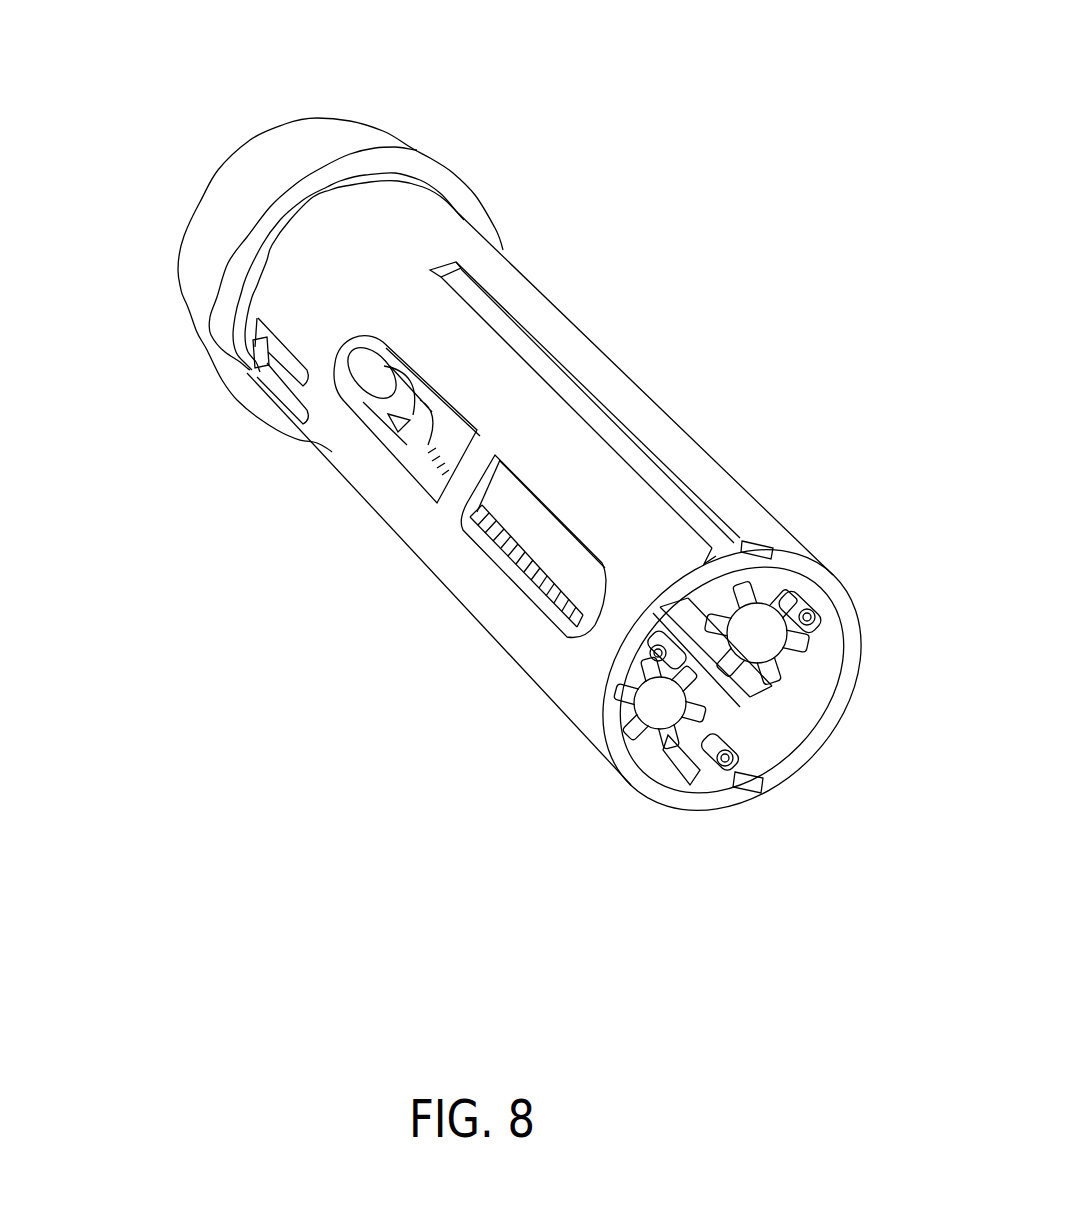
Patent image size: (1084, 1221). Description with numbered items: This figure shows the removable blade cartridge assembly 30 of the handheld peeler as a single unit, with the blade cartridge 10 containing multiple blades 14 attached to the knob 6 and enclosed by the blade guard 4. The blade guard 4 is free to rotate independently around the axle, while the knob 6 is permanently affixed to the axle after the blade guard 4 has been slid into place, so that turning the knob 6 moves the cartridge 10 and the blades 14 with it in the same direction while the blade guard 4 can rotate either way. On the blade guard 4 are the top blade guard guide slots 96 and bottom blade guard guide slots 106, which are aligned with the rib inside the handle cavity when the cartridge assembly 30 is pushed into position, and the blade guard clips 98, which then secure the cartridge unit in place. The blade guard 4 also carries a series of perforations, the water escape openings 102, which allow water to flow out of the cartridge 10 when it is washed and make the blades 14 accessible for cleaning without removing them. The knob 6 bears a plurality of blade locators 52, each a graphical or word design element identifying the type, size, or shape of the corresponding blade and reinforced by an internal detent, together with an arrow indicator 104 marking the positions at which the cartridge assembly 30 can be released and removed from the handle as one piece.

The blade guard 4 is at (521, 309).
The knob 6 is at (324, 148).
The blade cartridge 10 is at (828, 649).
The blade 14 is at (727, 725).
The blade cartridge assembly 30 is at (316, 529).
The blade locator 52 is at (303, 140).
The top blade guard guide slot 96 is at (727, 767).
The blade guard clip 98 is at (250, 365).
The water escape opening 102 is at (472, 505).
The arrow indicator 104 is at (190, 268).
The bottom blade guard guide slot 106 is at (622, 435).